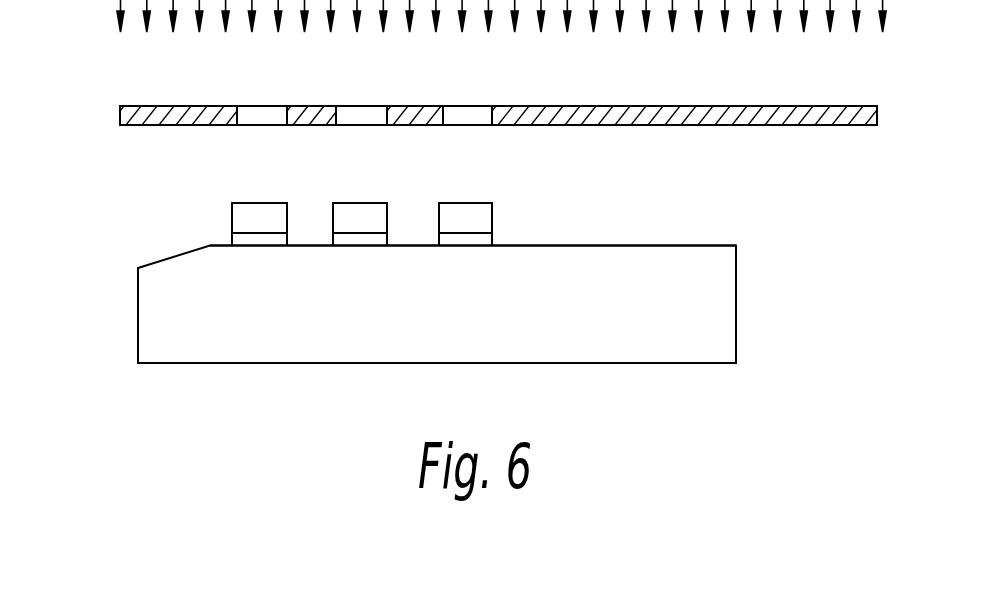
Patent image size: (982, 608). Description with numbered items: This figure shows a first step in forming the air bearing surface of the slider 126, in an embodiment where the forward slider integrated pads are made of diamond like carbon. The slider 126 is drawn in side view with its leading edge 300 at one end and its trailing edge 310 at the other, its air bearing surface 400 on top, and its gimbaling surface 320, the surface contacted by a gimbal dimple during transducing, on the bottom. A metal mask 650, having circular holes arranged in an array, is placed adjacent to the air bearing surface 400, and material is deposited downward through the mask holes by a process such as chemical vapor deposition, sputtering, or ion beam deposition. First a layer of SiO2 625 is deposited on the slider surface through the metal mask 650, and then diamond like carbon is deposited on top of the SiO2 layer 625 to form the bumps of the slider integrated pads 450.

The metal mask 650 is at (120, 115).
The forward slider integrated pads 450 is at (248, 203).
The SiO2 layer 625 is at (238, 241).
The air bearing surface 400 is at (662, 245).
The trailing edge 310 is at (737, 297).
The leading edge 300 is at (138, 318).
The slider 126 is at (248, 348).
The gimbaling surface 320 is at (293, 365).